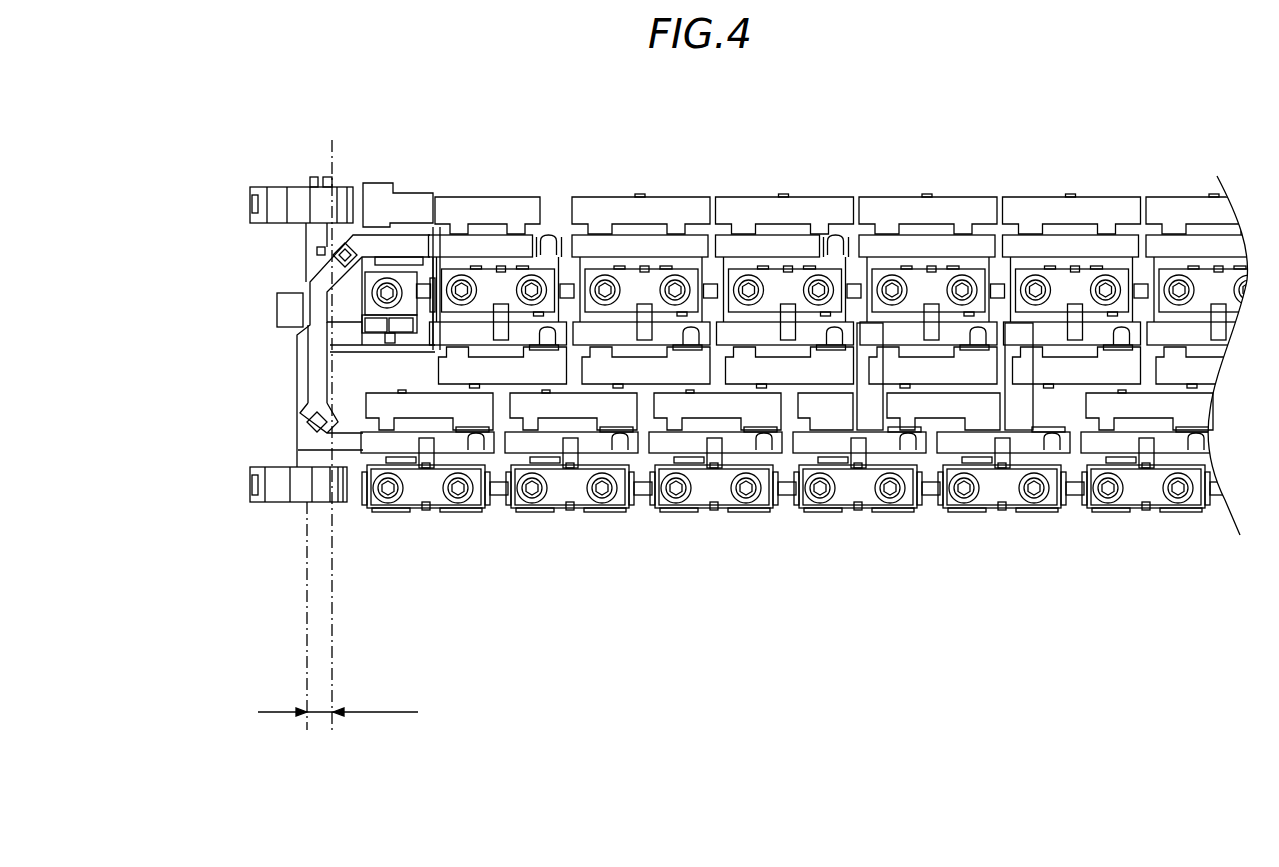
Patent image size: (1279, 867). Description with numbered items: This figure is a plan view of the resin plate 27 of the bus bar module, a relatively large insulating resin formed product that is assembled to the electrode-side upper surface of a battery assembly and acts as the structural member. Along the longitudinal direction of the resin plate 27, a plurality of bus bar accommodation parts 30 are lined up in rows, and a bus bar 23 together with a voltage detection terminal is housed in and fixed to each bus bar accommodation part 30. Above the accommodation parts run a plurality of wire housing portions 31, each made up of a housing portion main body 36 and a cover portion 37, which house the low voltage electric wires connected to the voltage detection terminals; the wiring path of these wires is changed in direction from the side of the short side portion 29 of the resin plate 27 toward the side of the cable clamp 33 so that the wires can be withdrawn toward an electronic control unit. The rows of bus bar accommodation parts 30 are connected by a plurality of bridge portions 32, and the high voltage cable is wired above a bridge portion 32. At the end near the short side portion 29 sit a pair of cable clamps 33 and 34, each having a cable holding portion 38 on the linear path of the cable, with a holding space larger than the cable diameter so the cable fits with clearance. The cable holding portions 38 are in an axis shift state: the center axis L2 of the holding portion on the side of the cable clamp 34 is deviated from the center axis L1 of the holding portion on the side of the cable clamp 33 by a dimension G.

The bus bar 23 is at (1133, 493).
The resin plate 27 is at (1057, 195).
The short side portion 29 is at (305, 352).
The bus bar accommodation part 30 is at (1173, 507).
The wire housing portion 31 is at (928, 149).
The bridge portion 32 is at (312, 380).
The cable clamp 33 is at (280, 183).
The cable clamp 34 is at (270, 506).
The housing portion main body 36 is at (940, 243).
The cover portion 37 is at (885, 205).
The cable holding portion 38 is at (277, 217).
The center axis L1 is at (337, 150).
The center axis L2 is at (307, 692).
The dimension G is at (338, 701).